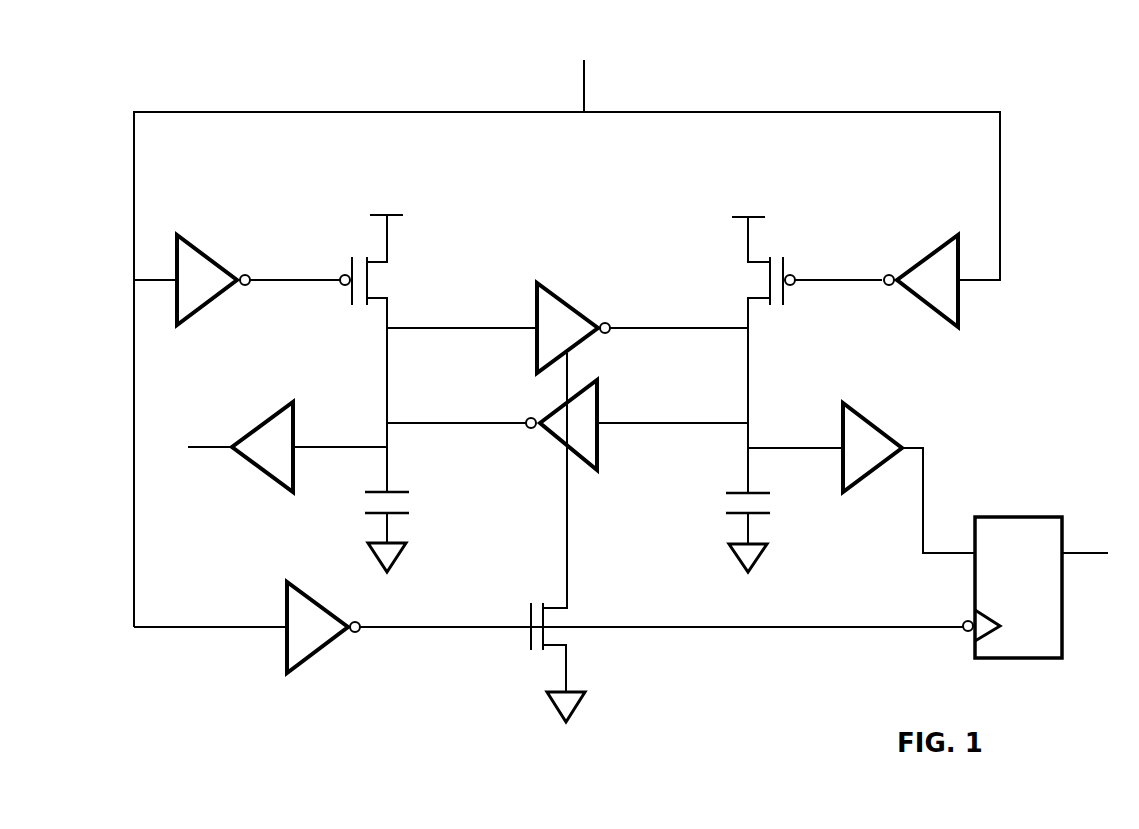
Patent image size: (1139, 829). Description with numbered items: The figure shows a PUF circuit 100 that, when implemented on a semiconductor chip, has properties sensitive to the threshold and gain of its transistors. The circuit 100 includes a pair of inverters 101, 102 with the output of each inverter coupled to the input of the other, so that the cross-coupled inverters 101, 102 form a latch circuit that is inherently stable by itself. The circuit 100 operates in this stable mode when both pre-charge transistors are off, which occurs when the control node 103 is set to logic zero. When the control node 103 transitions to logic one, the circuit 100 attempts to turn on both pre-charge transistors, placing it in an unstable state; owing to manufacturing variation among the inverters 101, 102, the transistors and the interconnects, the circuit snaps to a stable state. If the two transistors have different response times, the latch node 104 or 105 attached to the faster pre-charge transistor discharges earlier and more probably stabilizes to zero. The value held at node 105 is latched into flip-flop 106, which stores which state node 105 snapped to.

The PUF circuit 100 is at (943, 43).
The first inverter 101 is at (565, 323).
The second inverter 102 is at (588, 448).
The control node 103 is at (587, 89).
The latch node 104 is at (387, 390).
The latch node 105 is at (750, 380).
The flip-flop 106 is at (1019, 533).